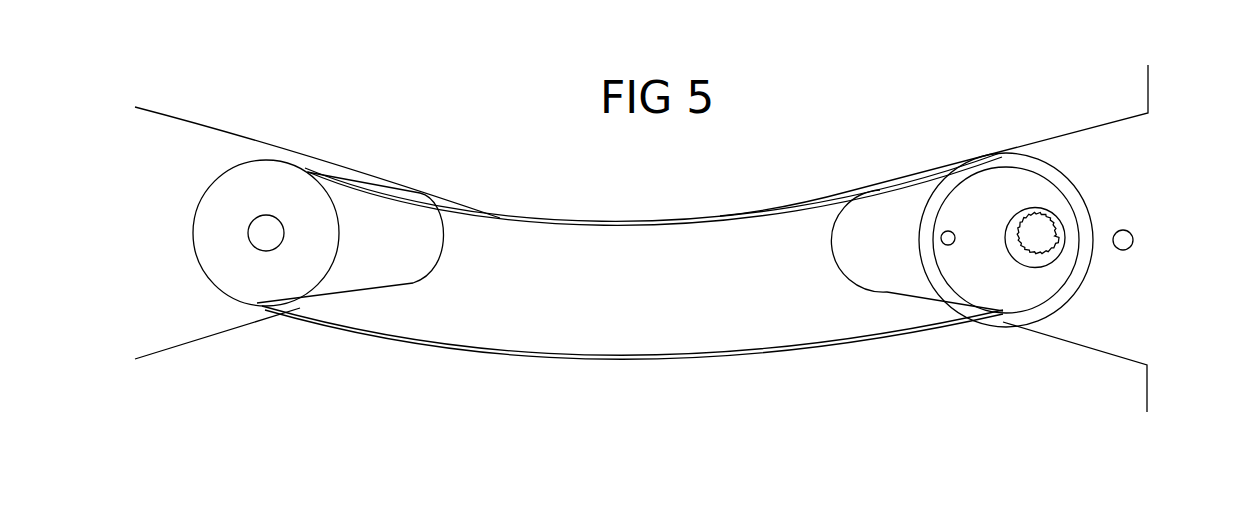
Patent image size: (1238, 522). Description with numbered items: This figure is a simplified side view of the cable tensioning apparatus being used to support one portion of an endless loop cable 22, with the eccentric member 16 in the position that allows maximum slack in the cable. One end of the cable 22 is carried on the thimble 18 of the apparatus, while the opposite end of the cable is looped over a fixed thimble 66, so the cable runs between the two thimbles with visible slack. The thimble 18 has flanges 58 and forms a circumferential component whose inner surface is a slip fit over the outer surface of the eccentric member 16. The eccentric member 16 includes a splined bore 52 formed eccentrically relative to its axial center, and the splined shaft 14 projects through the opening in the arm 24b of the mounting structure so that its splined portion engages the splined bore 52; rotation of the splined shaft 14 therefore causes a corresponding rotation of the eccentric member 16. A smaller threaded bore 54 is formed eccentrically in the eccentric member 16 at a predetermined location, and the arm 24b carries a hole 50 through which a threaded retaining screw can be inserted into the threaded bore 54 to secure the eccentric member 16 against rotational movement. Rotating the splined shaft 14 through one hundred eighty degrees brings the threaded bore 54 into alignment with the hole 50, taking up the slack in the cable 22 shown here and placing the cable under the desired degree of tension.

The fixed thimble 66 is at (223, 202).
The endless loop cable 22 is at (742, 355).
The arm 24b is at (1122, 140).
The thimble 18 is at (1053, 318).
The flanges 58 is at (993, 163).
The eccentric member 16 is at (1002, 283).
The threaded bore 54 is at (948, 230).
The splined bore 52 is at (1047, 253).
The splined shaft 14 is at (1038, 228).
The hole 50 is at (1125, 250).